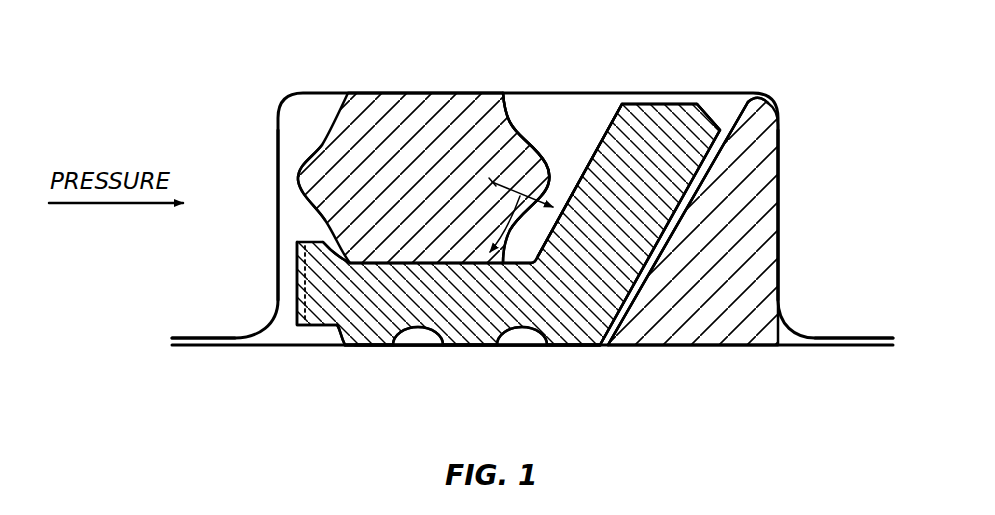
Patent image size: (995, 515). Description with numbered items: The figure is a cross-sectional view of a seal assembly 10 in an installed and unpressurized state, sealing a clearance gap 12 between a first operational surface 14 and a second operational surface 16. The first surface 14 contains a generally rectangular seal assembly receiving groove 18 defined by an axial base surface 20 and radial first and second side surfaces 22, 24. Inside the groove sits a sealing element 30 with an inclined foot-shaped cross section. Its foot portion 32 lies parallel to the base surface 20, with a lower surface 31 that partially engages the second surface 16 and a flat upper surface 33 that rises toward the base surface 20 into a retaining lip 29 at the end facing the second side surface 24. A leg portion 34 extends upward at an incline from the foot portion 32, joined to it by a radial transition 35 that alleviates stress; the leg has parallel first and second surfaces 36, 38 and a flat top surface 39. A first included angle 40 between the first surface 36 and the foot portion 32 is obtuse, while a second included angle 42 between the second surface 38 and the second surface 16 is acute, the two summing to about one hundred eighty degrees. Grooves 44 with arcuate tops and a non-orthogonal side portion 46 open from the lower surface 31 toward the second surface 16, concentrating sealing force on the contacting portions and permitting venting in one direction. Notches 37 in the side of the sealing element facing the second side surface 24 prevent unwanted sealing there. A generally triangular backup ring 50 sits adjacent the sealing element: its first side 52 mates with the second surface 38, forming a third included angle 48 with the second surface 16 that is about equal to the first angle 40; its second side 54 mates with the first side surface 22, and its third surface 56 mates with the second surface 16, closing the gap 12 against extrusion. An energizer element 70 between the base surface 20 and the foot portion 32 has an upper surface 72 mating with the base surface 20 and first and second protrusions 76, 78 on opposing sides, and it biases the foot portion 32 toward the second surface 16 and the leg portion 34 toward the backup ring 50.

The seal assembly 10 is at (803, 52).
The clearance gap 12 is at (900, 342).
The first operational surface 14 is at (200, 338).
The second operational surface 16 is at (220, 348).
The seal assembly receiving groove 18 is at (287, 133).
The base surface 20 is at (521, 95).
The first side surface 22 is at (768, 202).
The second side surface 24 is at (278, 200).
The retaining lip 29 is at (325, 245).
The sealing element 30 is at (590, 350).
The lower surface 31 is at (365, 350).
The foot portion 32 is at (333, 316).
The upper surface 33 is at (392, 262).
The leg portion 34 is at (627, 103).
The radial transition 35 is at (500, 216).
The first surface 36 is at (605, 122).
The notches 37 is at (297, 272).
The second surface 38 is at (720, 128).
The top surface 39 is at (670, 103).
The first included angle 40 is at (516, 178).
The second included angle 42 is at (652, 328).
The grooves 44 is at (423, 348).
The side portion 46 is at (412, 347).
The third included angle 48 is at (600, 283).
The backup ring 50 is at (768, 242).
The first side 52 is at (742, 100).
The second side 54 is at (780, 165).
The third surface 56 is at (732, 340).
The energizer element 70 is at (400, 105).
The upper surface 72 is at (465, 92).
The first protrusion 76 is at (318, 170).
The second protrusion 78 is at (525, 162).